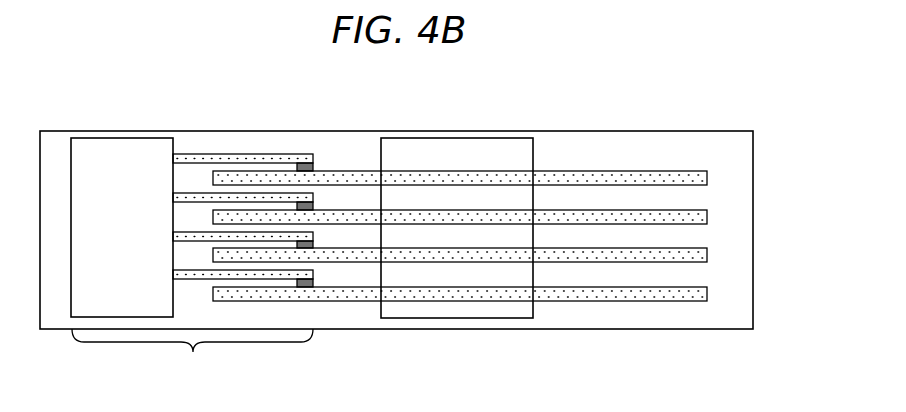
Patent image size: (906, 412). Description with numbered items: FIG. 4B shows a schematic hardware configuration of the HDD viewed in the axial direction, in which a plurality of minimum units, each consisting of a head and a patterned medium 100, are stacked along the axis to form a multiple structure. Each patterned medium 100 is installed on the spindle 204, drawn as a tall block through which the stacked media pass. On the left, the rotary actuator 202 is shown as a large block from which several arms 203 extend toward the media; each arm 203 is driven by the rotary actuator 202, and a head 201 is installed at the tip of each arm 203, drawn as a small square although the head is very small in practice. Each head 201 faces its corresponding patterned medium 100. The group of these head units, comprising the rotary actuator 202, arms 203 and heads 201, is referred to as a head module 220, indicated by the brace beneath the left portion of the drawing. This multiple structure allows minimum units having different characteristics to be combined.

The patterned medium 100 is at (363, 176).
The head 201 is at (304, 162).
The rotary actuator 202 is at (117, 147).
The arm 203 is at (197, 154).
The spindle 204 is at (515, 145).
The head module 220 is at (192, 357).